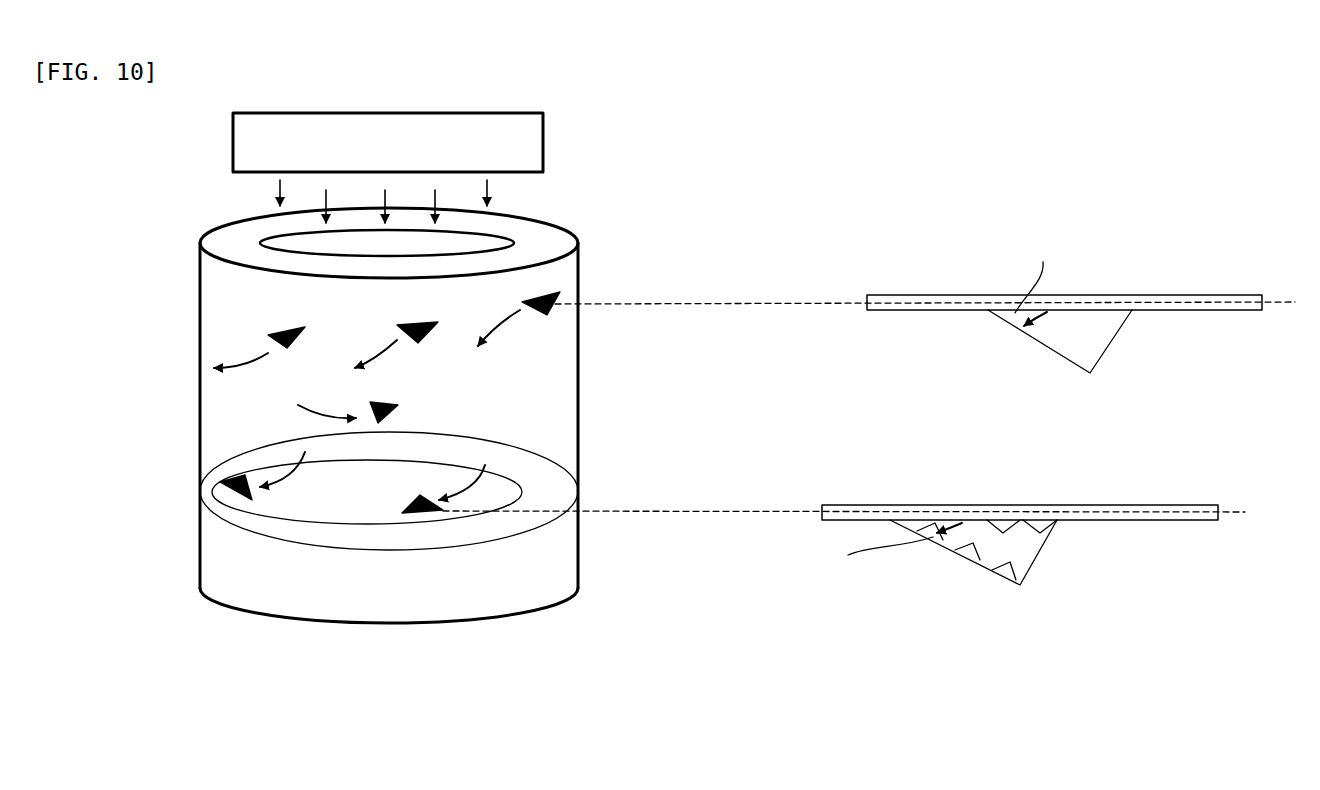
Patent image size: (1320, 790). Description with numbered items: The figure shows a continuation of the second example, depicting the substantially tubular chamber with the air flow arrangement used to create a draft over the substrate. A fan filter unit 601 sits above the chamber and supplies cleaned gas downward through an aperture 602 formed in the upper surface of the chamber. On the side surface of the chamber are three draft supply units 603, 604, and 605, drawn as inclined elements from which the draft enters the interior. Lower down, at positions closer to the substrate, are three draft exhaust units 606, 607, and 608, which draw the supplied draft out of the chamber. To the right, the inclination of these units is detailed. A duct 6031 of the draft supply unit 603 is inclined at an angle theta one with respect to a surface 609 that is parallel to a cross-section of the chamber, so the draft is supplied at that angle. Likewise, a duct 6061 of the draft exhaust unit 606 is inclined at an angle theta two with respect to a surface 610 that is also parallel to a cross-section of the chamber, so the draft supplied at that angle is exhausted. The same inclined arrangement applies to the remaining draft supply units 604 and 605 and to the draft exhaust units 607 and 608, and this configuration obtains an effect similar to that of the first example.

The fan filter unit 601 is at (527, 140).
The aperture 602 is at (513, 238).
The draft supply unit 603 is at (557, 307).
The draft supply unit 604 is at (425, 335).
The draft supply unit 605 is at (268, 336).
The draft exhaust unit 606 is at (420, 513).
The draft exhaust unit 607 is at (220, 485).
The draft exhaust unit 608 is at (398, 405).
The surface 609 is at (1262, 302).
The surface 610 is at (1218, 512).
The duct 6031 is at (1085, 366).
The duct 6061 is at (1020, 582).